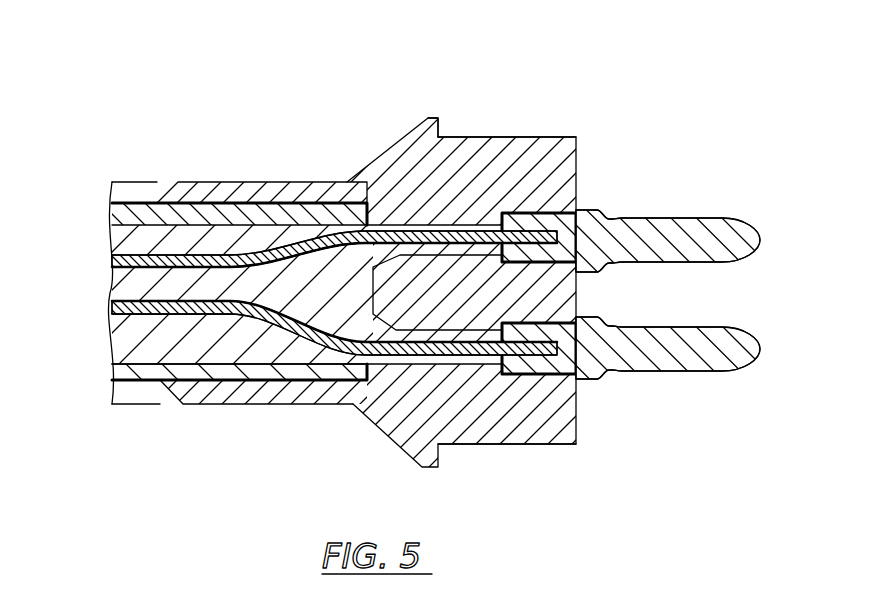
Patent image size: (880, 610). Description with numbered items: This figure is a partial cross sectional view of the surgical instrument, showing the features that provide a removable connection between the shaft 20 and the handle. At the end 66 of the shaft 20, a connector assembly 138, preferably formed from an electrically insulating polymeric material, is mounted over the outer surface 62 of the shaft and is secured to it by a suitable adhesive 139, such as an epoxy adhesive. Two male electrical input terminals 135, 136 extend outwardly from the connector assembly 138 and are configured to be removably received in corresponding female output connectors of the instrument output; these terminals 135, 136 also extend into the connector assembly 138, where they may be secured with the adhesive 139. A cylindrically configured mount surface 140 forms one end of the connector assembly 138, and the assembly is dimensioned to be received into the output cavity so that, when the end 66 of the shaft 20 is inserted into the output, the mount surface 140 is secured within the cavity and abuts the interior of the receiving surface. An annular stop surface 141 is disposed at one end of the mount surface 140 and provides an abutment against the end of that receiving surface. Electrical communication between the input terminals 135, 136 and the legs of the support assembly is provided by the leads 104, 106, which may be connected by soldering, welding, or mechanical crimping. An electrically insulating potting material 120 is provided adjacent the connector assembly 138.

The end 66 is at (526, 83).
The annular stop surface 141 is at (442, 128).
The mount surface 140 is at (550, 137).
The connector assembly 138 is at (545, 445).
The shaft 20 is at (127, 204).
The potting material 120 is at (153, 343).
The outer surface 62 is at (152, 200).
The adhesive 139 is at (243, 203).
The lead 104 is at (333, 243).
The lead 106 is at (330, 340).
The electrical input terminal 135 is at (667, 225).
The electrical input terminal 136 is at (665, 358).